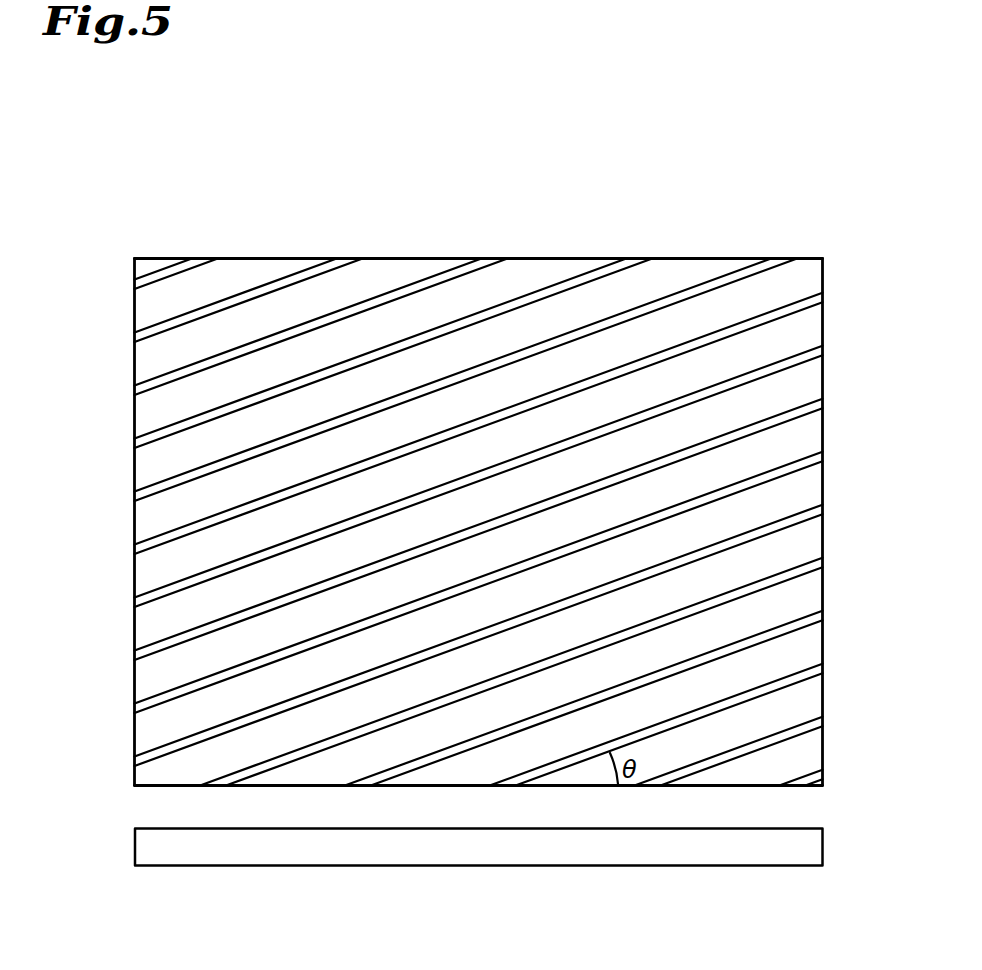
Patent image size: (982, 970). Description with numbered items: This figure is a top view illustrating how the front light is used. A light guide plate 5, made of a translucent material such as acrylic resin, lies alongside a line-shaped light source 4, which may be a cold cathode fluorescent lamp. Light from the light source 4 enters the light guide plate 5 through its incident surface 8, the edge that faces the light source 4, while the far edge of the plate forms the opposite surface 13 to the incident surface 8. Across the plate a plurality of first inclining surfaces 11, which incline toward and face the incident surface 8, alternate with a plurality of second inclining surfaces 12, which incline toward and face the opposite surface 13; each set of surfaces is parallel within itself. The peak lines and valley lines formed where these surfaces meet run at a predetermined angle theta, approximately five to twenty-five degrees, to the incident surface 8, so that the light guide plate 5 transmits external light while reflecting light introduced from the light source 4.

The line-shaped light source 4 is at (237, 850).
The light guide plate 5 is at (200, 610).
The incident surface 8 is at (747, 787).
The first inclining surface 11 is at (817, 355).
The second inclining surface 12 is at (815, 325).
The opposite surface to the incident surface 13 is at (531, 271).